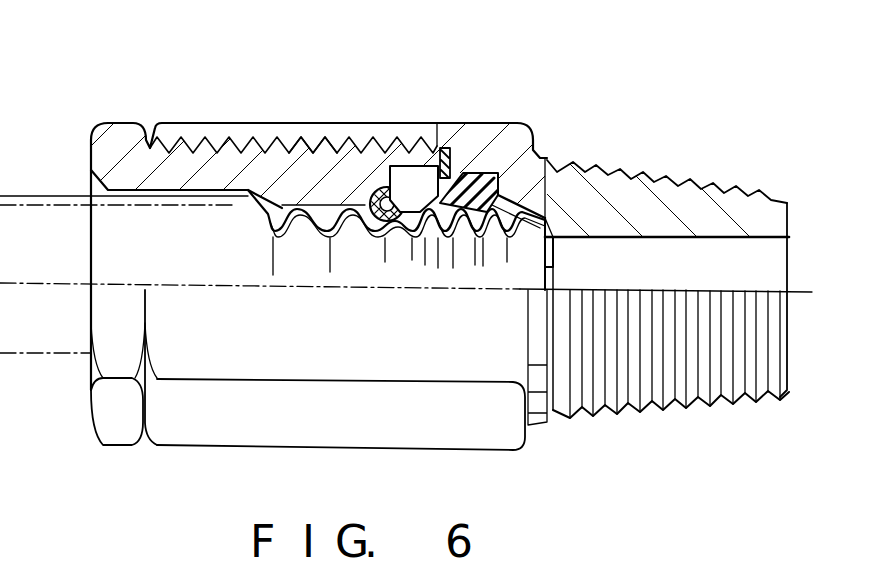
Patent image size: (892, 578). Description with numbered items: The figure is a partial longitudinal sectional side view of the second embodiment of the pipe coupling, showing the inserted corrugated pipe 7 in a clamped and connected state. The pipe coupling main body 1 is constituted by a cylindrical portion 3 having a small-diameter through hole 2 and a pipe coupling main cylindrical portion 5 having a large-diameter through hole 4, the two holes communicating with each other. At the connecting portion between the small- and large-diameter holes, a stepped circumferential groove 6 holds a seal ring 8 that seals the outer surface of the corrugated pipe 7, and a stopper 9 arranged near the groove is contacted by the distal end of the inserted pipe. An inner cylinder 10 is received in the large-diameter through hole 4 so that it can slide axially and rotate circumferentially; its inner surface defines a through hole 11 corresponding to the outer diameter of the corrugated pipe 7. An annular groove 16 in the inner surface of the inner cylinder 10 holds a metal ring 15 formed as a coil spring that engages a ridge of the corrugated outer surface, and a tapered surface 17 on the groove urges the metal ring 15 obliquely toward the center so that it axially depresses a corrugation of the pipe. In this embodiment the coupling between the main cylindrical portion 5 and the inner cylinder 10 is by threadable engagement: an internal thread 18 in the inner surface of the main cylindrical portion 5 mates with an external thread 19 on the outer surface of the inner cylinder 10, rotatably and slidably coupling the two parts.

The pipe coupling main body 1 is at (487, 140).
The small-diameter through hole 2 is at (657, 257).
The cylindrical portion 3 is at (723, 197).
The large-diameter through hole 4 is at (453, 173).
The pipe coupling main cylindrical portion 5 is at (243, 137).
The stepped circumferential groove 6 is at (492, 203).
The corrugated pipe 7 is at (445, 228).
The seal ring 8 is at (497, 180).
The stopper 9 is at (540, 220).
The inner cylinder 10 is at (177, 175).
The through hole 11 is at (288, 207).
The metal ring 15 is at (390, 183).
The annular groove 16 is at (410, 180).
The tapered surface 17 is at (372, 228).
The internal thread 18 is at (310, 157).
The external thread 19 is at (197, 140).